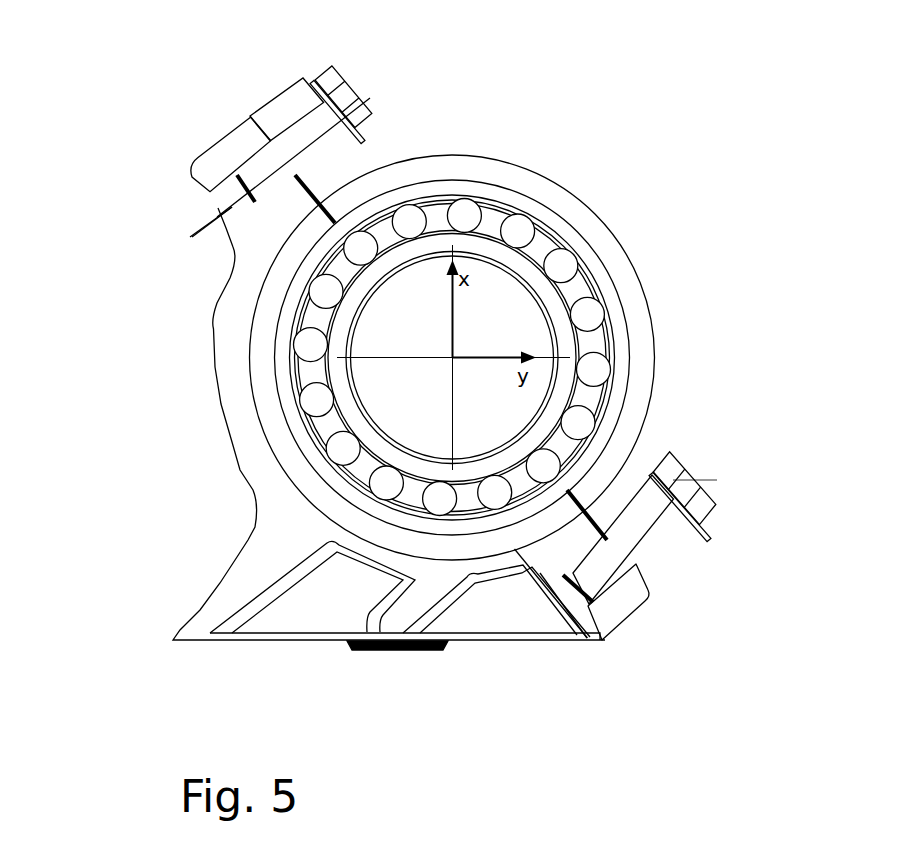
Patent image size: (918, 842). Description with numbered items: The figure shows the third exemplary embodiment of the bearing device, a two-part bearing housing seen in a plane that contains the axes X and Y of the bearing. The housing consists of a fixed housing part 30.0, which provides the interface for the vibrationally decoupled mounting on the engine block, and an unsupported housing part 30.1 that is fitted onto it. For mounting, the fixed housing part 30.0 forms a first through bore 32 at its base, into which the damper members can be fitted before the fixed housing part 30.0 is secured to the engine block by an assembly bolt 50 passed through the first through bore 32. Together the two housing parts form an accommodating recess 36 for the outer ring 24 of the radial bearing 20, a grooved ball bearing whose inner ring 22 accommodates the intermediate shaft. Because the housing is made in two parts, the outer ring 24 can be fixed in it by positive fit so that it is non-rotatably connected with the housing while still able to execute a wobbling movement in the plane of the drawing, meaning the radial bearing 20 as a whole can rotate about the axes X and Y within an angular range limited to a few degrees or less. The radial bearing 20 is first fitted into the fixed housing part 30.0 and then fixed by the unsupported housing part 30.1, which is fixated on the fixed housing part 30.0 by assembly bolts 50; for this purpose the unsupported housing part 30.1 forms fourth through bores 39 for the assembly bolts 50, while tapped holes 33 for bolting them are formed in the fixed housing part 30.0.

The radial bearing 20 is at (598, 345).
The inner ring 22 is at (520, 268).
The outer ring 24 is at (617, 308).
The fixed housing part 30.0 is at (236, 400).
The unsupported housing part 30.1 is at (552, 193).
The first through bore 32 is at (404, 660).
The tapped holes 33 is at (228, 185).
The accommodating recess 36 is at (478, 181).
The fourth through bores 39 is at (352, 88).
The assembly bolt 50 is at (300, 122).